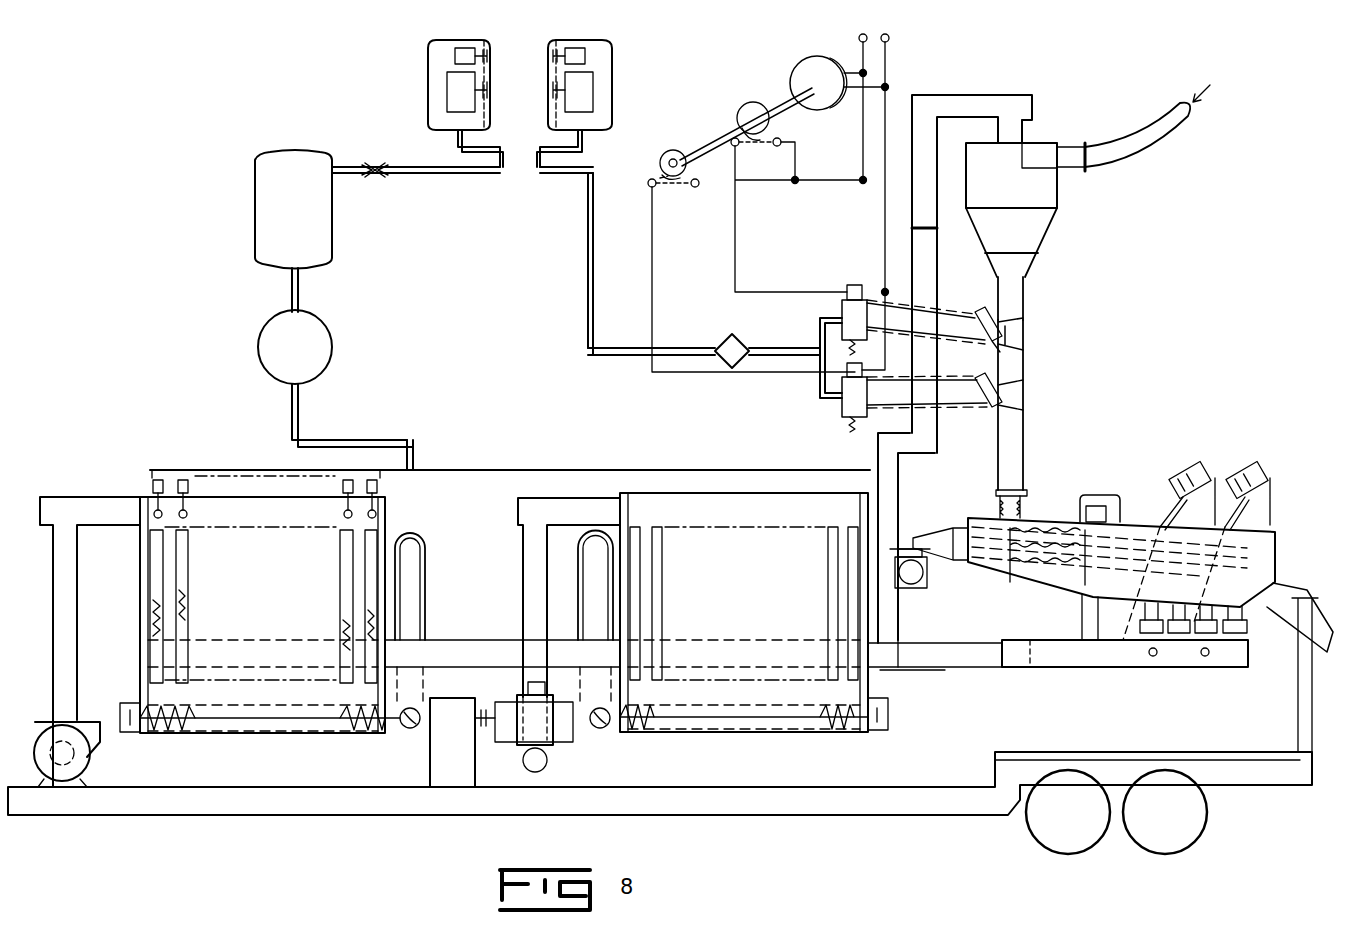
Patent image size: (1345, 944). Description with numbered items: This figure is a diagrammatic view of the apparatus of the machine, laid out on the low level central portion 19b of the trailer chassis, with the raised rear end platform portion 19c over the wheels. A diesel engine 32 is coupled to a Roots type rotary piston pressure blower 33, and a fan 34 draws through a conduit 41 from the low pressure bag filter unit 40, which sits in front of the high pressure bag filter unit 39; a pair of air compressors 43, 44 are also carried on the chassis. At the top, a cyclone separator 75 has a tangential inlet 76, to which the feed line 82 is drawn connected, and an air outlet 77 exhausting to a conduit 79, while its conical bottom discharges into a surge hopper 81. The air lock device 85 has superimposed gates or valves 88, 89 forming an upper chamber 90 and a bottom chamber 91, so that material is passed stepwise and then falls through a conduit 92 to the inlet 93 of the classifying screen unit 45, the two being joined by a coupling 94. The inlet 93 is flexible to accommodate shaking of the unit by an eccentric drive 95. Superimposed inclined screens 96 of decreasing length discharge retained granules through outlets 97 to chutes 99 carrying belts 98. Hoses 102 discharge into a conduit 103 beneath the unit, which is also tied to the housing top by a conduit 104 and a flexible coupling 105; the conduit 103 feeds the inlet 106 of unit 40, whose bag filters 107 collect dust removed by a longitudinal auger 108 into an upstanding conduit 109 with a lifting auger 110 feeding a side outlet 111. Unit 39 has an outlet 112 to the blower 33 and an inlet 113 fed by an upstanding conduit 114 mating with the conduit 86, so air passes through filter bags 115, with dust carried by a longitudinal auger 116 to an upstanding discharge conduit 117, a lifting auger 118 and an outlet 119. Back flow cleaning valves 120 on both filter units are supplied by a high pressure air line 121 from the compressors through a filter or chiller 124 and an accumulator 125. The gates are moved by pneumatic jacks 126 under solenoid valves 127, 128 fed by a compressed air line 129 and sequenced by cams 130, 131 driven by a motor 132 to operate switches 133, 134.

The low level elongated central portion 19b is at (732, 796).
The raised rear end platform portion 19c is at (1203, 770).
The diesel engine 32 is at (470, 732).
The rotary piston pressure blower 33 is at (558, 742).
The fan 34 is at (100, 748).
The high pressure bag filter unit 39 is at (750, 605).
The low pressure bag filter unit 40 is at (262, 605).
The conduit 41 is at (65, 606).
The air compressor 43 is at (428, 82).
The air compressor 44 is at (612, 80).
The classifying screen unit 45 is at (1290, 528).
The cyclone separator 75 is at (1047, 196).
The tangential inlet 76 is at (1072, 147).
The air outlet 77 is at (1030, 130).
The conduit 79 is at (912, 110).
The surge hopper 81 is at (1035, 258).
The hose 82 is at (1190, 120).
The air lock device 85 is at (1040, 345).
The conduit 86 is at (937, 240).
The upper gate or valve 88 is at (1025, 296).
The lower gate or valve 89 is at (1023, 398).
The upper chamber 90 is at (1000, 295).
The bottom chamber 91 is at (1020, 362).
The conduit 92 is at (1024, 462).
The inlet 93 is at (1025, 500).
The coupling 94 is at (997, 490).
The eccentric drive 95 is at (900, 548).
The inclined screens 96 is at (1075, 580).
The outlets 97 is at (1205, 635).
The belts 98 is at (1150, 635).
The chute 99 is at (1310, 622).
The hoses 102 is at (1248, 470).
The conduit 103 is at (1062, 660).
The conduit 104 is at (1090, 608).
The flexible coupling 105 is at (1118, 512).
The inlet 106 is at (455, 652).
The bag filters 107 is at (372, 590).
The longitudinal auger 108 is at (360, 730).
The upstanding conduit 109 is at (405, 540).
The lifting auger 110 is at (410, 730).
The side outlet 111 is at (425, 548).
The outlet 112 is at (553, 500).
The inlet 113 is at (905, 680).
The upstanding conduit 114 is at (896, 646).
The filter bags 115 is at (853, 545).
The longitudinal auger 116 is at (660, 732).
The upstanding discharge conduit 117 is at (592, 584).
The lifting auger 118 is at (604, 730).
The outlet 119 is at (612, 535).
The valves 120 is at (158, 478).
The high pressure air line 121 is at (358, 470).
The filter or chiller 124 is at (312, 218).
The storage tank or accumulator 125 is at (325, 335).
The pneumatic jacks 126 is at (985, 352).
The solenoid valve 127 is at (842, 308).
The solenoid valve 128 is at (842, 410).
The compressed air line 129 is at (660, 350).
The cam 130 is at (672, 150).
The cam 131 is at (758, 104).
The motor 132 is at (810, 106).
The switch 133 is at (660, 186).
The switch 134 is at (775, 150).